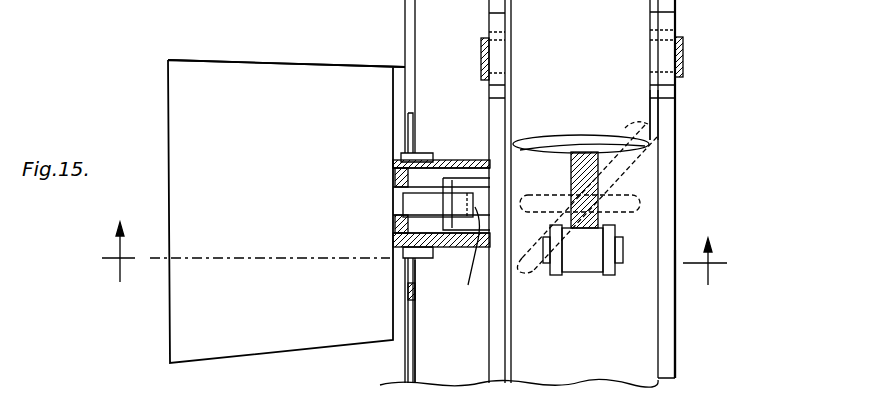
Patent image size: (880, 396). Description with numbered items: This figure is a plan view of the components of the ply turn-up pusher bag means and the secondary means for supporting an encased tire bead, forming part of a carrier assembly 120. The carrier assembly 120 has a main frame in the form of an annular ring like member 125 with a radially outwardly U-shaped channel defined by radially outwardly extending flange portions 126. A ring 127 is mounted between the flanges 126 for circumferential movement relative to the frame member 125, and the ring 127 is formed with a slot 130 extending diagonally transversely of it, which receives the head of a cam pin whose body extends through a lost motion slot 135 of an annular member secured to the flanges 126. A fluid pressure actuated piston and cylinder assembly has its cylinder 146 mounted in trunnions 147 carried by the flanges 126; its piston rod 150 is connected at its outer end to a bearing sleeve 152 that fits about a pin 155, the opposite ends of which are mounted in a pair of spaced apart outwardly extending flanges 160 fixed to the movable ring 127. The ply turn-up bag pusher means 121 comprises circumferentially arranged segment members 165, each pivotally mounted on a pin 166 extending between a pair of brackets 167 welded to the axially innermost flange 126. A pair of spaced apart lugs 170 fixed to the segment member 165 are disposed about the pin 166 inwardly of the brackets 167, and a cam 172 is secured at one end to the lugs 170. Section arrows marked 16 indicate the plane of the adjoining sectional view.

The segment member 165 is at (283, 194).
The ply turn-up bag pusher means 121 is at (278, 70).
The flange portion 126 is at (496, 328).
The ring 127 is at (640, 352).
The cam 172 is at (446, 321).
The trunnion 147 is at (497, 25).
The cylinder 146 is at (640, 110).
The carrier assembly 120 is at (692, 118).
The annular ring like member 125 is at (700, 192).
The piston rod 150 is at (572, 168).
The slot 130 is at (560, 165).
The lost motion slot 135 is at (640, 218).
The bearing sleeve 152 is at (585, 267).
The flange 160 is at (610, 277).
The pin 155 is at (545, 250).
The lug 170 is at (400, 228).
The bracket 167 is at (458, 165).
The pin 166 is at (412, 262).
The section line 16 is at (417, 265).